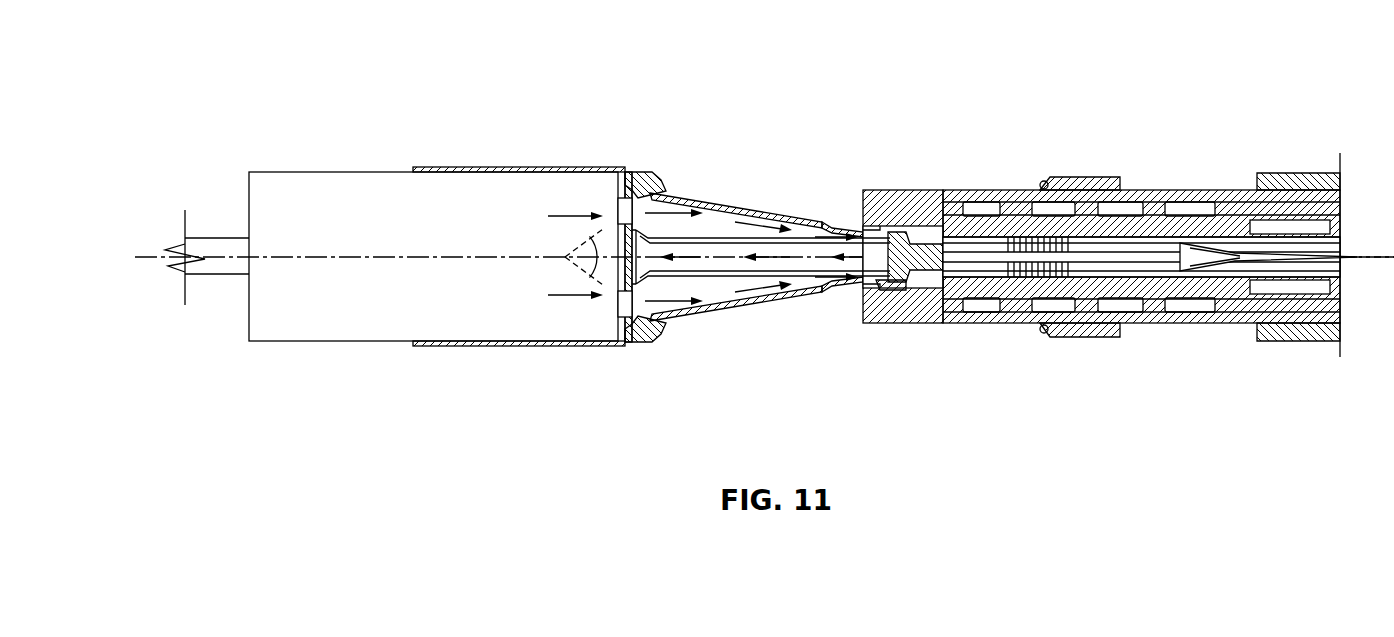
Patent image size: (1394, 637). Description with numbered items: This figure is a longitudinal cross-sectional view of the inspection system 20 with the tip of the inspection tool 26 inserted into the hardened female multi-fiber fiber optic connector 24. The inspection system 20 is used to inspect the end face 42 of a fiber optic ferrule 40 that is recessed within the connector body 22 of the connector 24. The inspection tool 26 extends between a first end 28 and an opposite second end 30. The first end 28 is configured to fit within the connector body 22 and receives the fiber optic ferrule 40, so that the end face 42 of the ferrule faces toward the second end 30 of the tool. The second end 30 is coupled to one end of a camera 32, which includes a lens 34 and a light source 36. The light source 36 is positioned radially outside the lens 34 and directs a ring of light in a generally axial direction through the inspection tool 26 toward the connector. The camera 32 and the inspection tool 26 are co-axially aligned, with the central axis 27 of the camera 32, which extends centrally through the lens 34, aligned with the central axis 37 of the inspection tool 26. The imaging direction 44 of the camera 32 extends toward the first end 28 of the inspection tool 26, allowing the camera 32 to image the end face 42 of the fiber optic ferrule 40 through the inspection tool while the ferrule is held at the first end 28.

The inspection system 20 is at (229, 62).
The connector body 22 is at (985, 190).
The hardened female multi-fiber fiber optic connector 24 is at (1197, 181).
The inspection tool 26 is at (746, 186).
The central axis of the camera 27 is at (152, 258).
The first end 28 is at (863, 192).
The second end 30 is at (582, 167).
The camera 32 is at (362, 166).
The lens 34 is at (568, 268).
The light source 36 is at (640, 172).
The central axis of the inspection tool 37 is at (1385, 255).
The fiber optic ferrule 40 is at (898, 288).
The end face 42 is at (917, 250).
The imaging direction 44 is at (560, 215).